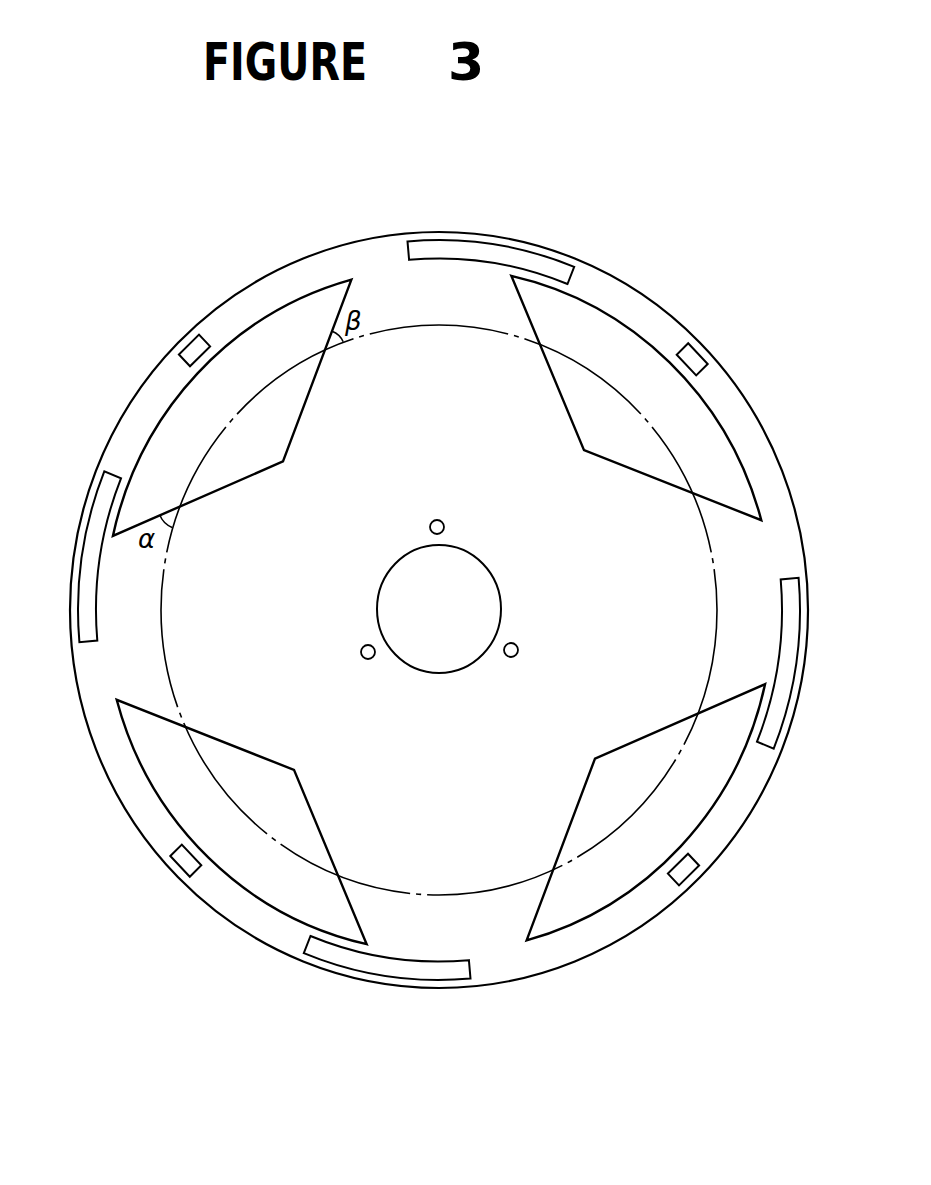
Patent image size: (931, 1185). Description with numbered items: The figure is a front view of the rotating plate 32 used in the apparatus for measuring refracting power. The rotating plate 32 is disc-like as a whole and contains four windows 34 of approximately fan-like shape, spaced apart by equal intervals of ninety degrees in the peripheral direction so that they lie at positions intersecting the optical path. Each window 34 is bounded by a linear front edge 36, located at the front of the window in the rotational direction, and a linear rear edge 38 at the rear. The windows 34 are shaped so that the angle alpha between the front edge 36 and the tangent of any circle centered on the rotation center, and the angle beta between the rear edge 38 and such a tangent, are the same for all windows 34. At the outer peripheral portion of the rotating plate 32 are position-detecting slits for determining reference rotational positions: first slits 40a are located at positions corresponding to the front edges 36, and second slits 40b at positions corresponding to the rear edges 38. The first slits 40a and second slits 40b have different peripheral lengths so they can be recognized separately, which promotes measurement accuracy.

The rotating plate 32 is at (244, 281).
The window 34 is at (168, 428).
The front edge 36 is at (566, 397).
The rear edge 38 is at (311, 391).
The first slit 40a is at (487, 250).
The second slit 40b is at (192, 353).